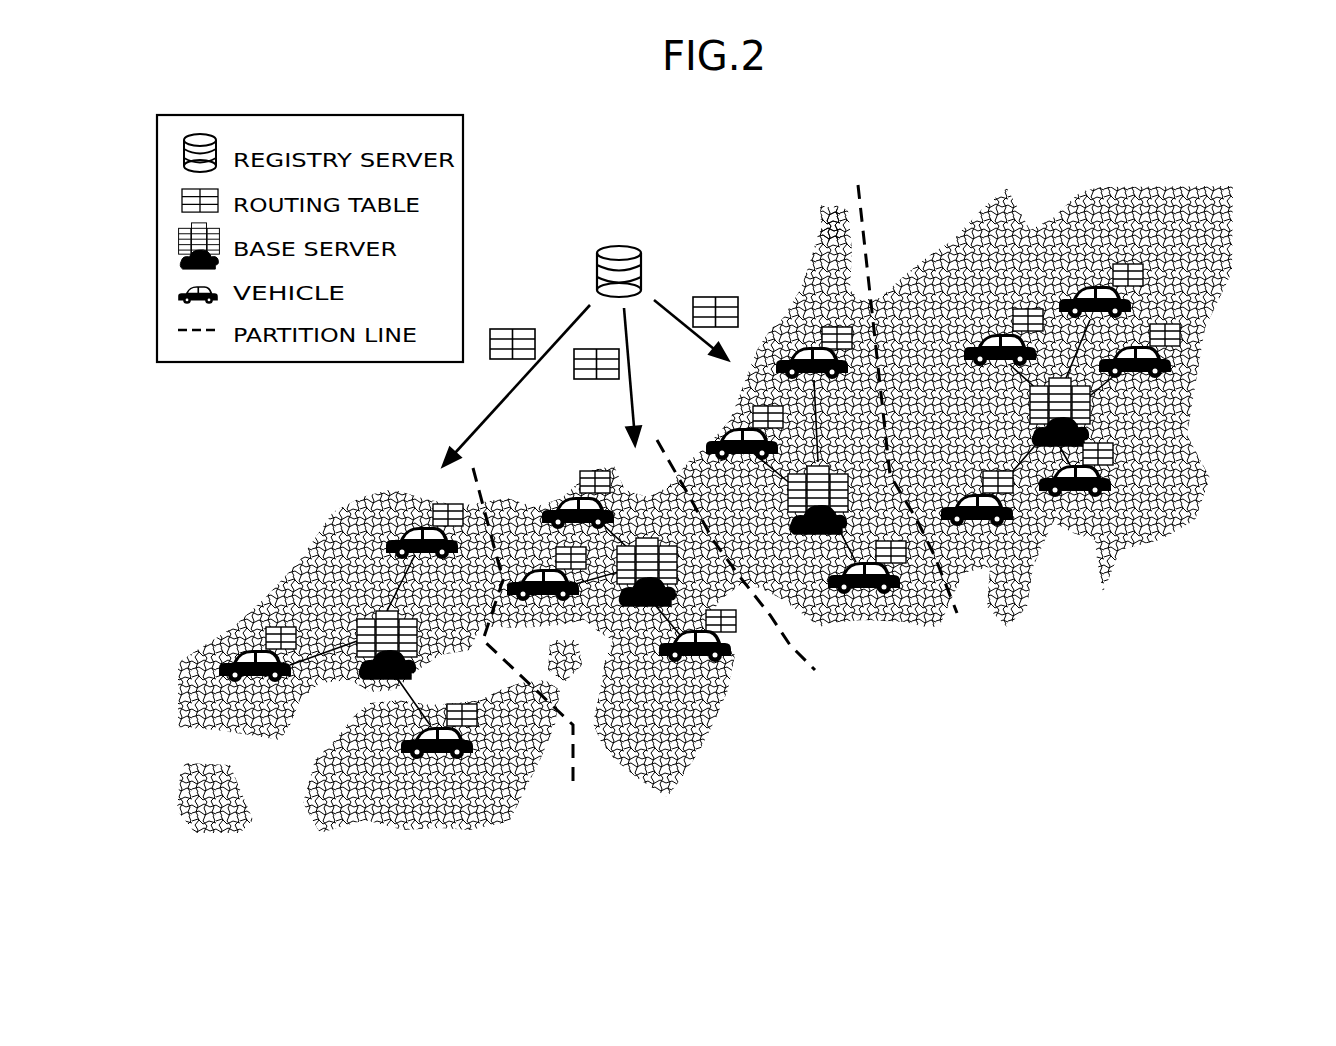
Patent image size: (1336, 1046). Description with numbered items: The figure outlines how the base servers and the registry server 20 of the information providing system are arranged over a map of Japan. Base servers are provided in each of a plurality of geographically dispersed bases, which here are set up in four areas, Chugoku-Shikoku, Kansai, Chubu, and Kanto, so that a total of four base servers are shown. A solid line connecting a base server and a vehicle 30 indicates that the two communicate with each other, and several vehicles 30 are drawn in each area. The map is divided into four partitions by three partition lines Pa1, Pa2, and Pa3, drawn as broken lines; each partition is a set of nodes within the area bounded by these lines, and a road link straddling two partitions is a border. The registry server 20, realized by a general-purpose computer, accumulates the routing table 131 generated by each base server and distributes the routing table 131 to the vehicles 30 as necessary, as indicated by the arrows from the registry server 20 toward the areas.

The registry server 20 is at (623, 243).
The routing table 131 is at (518, 328).
The vehicle 30 is at (437, 760).
The partition line Pa1 is at (583, 757).
The partition line Pa2 is at (820, 672).
The partition line Pa3 is at (963, 603).